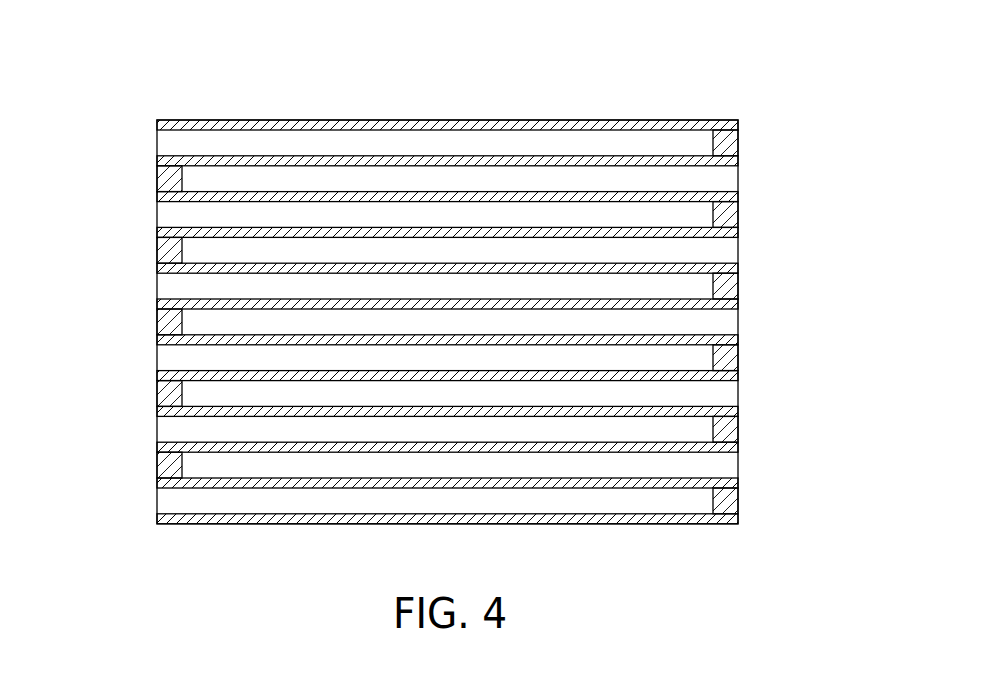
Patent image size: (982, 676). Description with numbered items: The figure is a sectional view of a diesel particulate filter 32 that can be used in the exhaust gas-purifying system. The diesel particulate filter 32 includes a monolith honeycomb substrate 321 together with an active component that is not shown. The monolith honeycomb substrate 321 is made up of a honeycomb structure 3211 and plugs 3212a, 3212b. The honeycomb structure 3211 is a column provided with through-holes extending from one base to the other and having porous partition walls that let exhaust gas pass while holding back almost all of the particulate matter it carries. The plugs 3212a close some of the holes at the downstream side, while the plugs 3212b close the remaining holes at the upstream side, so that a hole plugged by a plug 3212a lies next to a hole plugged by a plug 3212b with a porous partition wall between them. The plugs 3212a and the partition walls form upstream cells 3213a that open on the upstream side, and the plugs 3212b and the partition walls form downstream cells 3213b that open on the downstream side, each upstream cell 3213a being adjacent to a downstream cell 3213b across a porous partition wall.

The diesel particulate filter 32 is at (722, 93).
The monolith honeycomb substrate 321 is at (338, 116).
The honeycomb structure 3211 is at (515, 120).
The plugs 3212a is at (738, 150).
The plugs 3212b is at (157, 180).
The upstream cells 3213a is at (410, 152).
The downstream cells 3213b is at (507, 188).